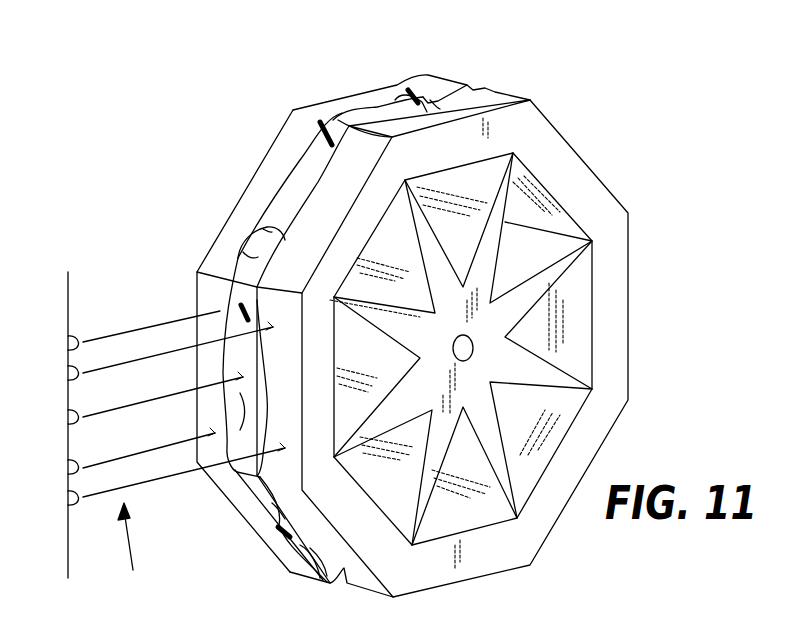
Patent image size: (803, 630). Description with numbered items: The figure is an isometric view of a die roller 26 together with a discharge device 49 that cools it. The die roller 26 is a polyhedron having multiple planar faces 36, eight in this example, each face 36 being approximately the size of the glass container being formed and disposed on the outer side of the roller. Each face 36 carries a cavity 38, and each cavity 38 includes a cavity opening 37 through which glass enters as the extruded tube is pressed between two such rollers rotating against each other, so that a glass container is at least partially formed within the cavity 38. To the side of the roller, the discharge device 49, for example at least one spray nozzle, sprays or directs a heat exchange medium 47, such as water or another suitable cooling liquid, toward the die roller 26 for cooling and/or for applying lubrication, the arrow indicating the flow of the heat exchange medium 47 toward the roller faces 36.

The die roller 26 is at (548, 148).
The planar face 36 is at (368, 95).
The cavity opening 37 is at (322, 128).
The cavity 38 is at (435, 107).
The heat exchange medium 47 is at (136, 552).
The discharge device 49 is at (67, 450).